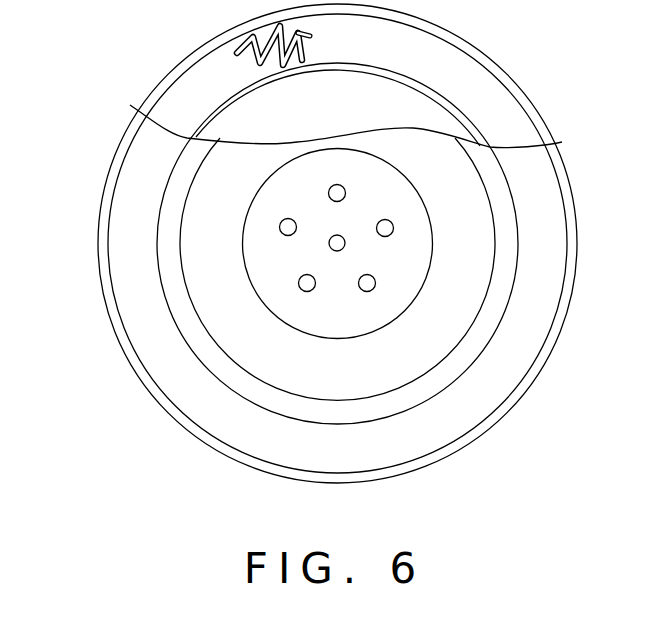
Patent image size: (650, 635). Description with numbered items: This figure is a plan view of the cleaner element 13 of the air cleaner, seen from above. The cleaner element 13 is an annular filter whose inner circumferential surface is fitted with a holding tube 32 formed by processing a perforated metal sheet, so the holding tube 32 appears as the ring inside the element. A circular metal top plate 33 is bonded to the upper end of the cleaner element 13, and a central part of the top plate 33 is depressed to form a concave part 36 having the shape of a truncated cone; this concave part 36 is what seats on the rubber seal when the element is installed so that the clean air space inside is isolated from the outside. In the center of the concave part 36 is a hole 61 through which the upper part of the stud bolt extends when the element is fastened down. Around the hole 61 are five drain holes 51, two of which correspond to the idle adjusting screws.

The cleaner element 13 is at (250, 70).
The holding tube 32 is at (397, 75).
The top plate 33 is at (128, 208).
The concave part 36 is at (268, 268).
The drain holes 51 is at (282, 229).
The hole 61 is at (343, 247).